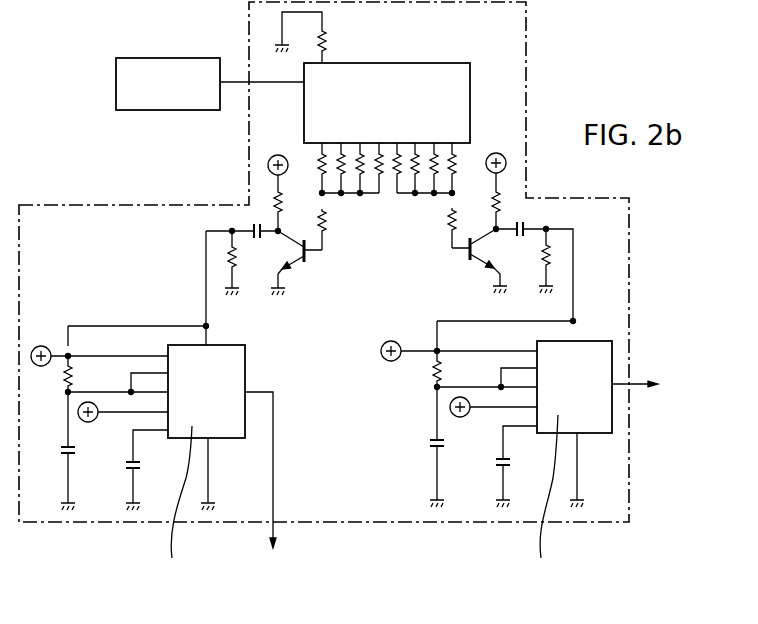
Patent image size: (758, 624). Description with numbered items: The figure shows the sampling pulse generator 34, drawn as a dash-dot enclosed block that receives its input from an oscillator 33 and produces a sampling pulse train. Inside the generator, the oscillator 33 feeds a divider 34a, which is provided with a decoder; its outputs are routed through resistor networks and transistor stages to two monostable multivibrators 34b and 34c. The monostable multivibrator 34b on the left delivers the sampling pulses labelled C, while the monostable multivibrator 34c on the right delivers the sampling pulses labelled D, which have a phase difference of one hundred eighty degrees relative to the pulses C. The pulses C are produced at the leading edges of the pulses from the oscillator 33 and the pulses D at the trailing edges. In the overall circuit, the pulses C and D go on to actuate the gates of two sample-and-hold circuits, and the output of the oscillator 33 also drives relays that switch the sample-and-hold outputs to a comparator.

The oscillator 33 is at (212, 34).
The sampling pulse generator 34 is at (526, 107).
The divider 34a is at (452, 46).
The monostable multivibrator 34b is at (240, 357).
The monostable multivibrator 34c is at (597, 348).